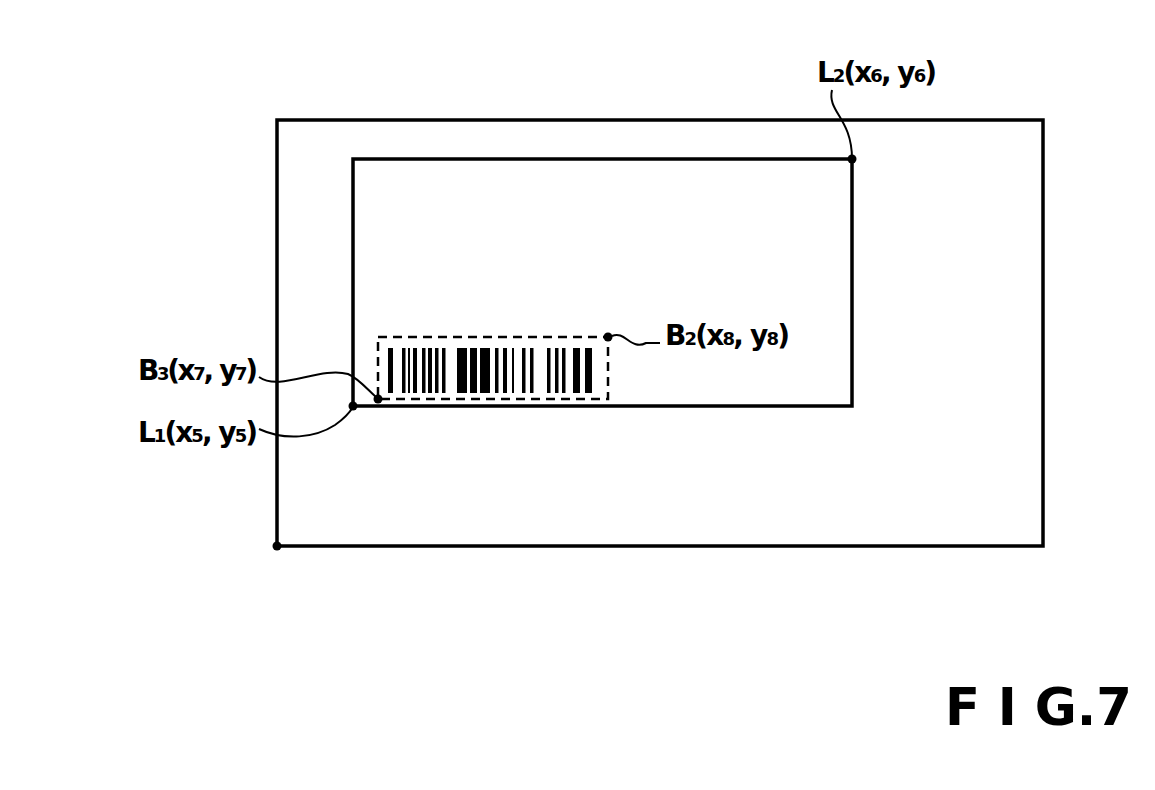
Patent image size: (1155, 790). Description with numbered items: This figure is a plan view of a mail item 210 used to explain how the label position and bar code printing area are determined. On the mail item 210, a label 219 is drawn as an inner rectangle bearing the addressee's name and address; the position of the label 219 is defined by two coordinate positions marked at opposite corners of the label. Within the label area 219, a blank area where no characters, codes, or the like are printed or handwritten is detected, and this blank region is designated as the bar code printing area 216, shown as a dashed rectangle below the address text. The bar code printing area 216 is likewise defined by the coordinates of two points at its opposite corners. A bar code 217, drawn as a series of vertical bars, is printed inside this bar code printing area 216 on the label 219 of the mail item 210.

The mail item (postcard) 210 is at (486, 120).
The label 219 is at (852, 239).
The bar code printing area 216 is at (608, 372).
The bar code 217 is at (428, 380).